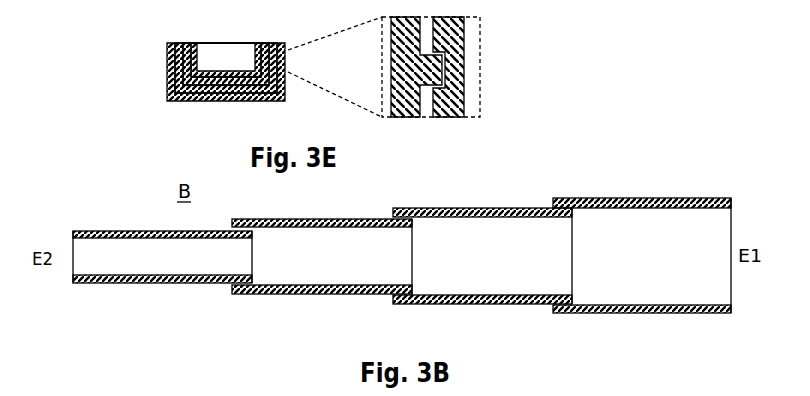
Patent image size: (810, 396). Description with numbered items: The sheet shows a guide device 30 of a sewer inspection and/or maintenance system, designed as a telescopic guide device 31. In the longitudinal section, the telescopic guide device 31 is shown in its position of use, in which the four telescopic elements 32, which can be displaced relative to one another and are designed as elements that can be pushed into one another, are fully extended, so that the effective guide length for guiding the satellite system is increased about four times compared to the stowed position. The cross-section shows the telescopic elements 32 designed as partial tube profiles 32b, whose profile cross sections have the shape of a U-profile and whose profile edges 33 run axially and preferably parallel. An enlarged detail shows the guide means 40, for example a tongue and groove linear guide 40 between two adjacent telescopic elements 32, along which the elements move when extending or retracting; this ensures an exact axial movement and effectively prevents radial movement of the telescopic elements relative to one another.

In FIG. 3B, the guide device 30 is at (402, 244).
In FIG. 3B, the telescopic guide device 31 is at (402, 244).
In FIG. 3E, the telescopic elements 32 is at (156, 55).
In FIG. 3B, the telescopic elements 32 is at (195, 283).
In FIG. 3E, the partial tube profiles 32b is at (156, 55).
In FIG. 3E, the profile edges 33 is at (226, 52).
In FIG. 3E, the guide means 40 is at (446, 62).